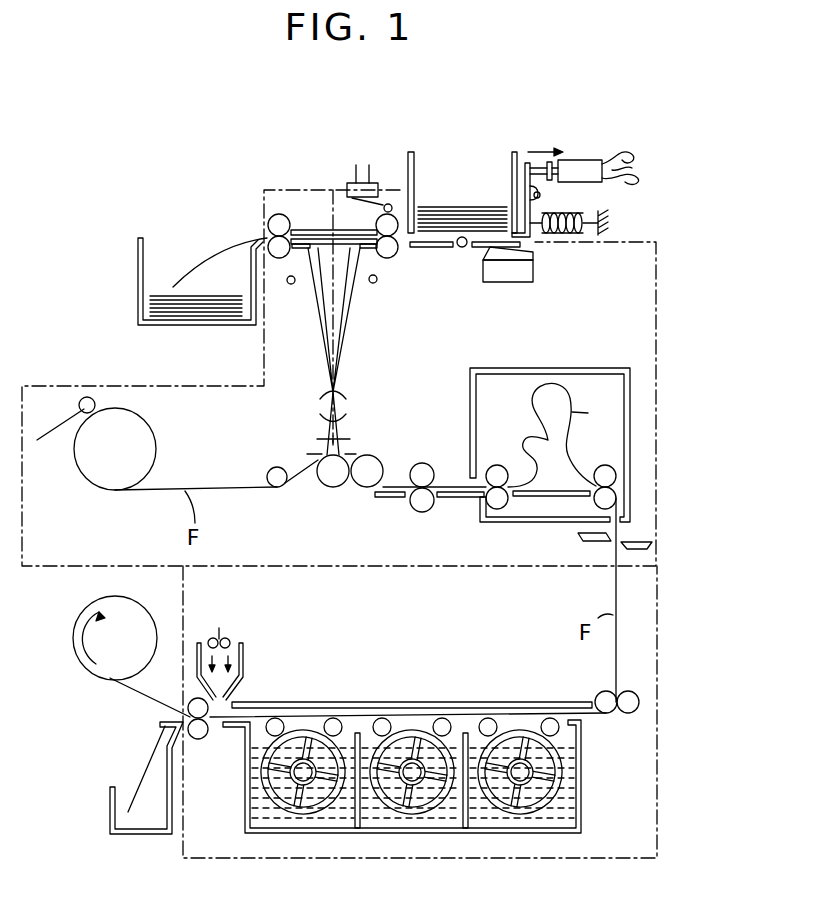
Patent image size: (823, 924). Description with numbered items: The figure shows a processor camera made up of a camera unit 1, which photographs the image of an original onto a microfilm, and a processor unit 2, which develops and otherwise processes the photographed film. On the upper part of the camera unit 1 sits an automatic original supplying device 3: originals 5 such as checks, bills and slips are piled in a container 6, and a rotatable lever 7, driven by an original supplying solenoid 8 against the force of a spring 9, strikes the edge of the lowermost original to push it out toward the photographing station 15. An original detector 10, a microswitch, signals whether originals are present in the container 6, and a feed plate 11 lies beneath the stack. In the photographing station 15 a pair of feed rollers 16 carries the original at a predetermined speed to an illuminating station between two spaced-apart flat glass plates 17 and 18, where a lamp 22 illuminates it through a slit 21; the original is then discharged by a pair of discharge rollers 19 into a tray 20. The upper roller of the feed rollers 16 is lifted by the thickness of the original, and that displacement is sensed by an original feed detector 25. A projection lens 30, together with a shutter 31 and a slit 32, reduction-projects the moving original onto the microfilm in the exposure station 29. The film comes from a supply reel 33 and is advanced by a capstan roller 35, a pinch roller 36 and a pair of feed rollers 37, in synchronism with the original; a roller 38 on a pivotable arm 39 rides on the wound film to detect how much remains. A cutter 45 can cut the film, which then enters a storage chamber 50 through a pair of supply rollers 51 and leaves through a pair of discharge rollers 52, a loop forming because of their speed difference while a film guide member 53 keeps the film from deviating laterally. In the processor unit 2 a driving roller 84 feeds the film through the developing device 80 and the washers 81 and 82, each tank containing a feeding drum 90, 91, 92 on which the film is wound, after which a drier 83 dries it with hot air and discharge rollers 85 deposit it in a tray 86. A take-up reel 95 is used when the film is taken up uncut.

The camera unit 1 is at (658, 252).
The processor unit 2 is at (659, 787).
The automatic original supplying device 3 is at (481, 171).
The originals 5 is at (435, 210).
The container 6 is at (409, 160).
The rotatable lever 7 is at (548, 214).
The original supplying solenoid 8 is at (585, 160).
The spring 9 is at (590, 213).
The original detector 10 is at (505, 283).
The feed plate 11 is at (410, 248).
The photographing station 15 is at (330, 213).
The pair of feed rollers 16 is at (392, 257).
The flat glass plate 17 is at (334, 351).
The flat glass plate 18 is at (302, 230).
The pair of discharge rollers 19 is at (278, 214).
The tray 20 is at (185, 253).
The slit 21 is at (333, 258).
The lamp 22 is at (290, 285).
The original feed detector 25 is at (369, 174).
The exposure station 29 is at (301, 448).
The projection lens 30 is at (347, 402).
The shutter 31 is at (320, 437).
The slit 32 is at (352, 452).
The supply reel 33 is at (147, 420).
The capstan roller 35 is at (332, 484).
The pinch roller 36 is at (363, 484).
The pair of feed rollers 37 is at (423, 512).
The roller 38 is at (88, 397).
The pivotable arm 39 is at (56, 431).
The cutter 45 is at (636, 549).
The storage chamber 50 is at (593, 387).
The pair of supply rollers 51 is at (498, 465).
The pair of discharge rollers 52 is at (605, 465).
The film guide member 53 is at (542, 497).
The developing device 80 is at (550, 820).
The washer 81 is at (440, 820).
The washer 82 is at (332, 820).
The drier 83 is at (222, 658).
The driving roller 84 is at (640, 700).
The discharge rollers 85 is at (200, 739).
The tray 86 is at (138, 834).
The feeding drum 90 is at (522, 728).
The feeding drum 91 is at (412, 728).
The feeding drum 92 is at (307, 728).
The take-up reel 95 is at (95, 668).